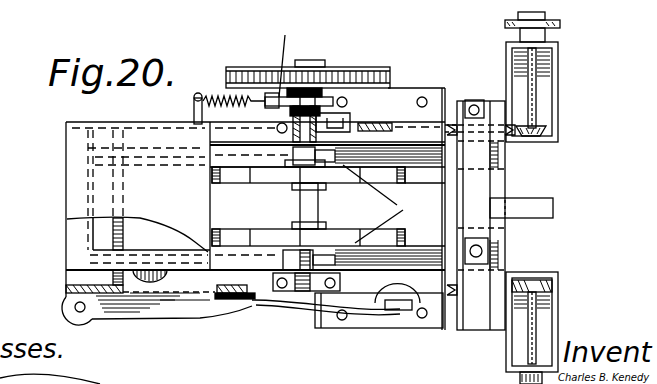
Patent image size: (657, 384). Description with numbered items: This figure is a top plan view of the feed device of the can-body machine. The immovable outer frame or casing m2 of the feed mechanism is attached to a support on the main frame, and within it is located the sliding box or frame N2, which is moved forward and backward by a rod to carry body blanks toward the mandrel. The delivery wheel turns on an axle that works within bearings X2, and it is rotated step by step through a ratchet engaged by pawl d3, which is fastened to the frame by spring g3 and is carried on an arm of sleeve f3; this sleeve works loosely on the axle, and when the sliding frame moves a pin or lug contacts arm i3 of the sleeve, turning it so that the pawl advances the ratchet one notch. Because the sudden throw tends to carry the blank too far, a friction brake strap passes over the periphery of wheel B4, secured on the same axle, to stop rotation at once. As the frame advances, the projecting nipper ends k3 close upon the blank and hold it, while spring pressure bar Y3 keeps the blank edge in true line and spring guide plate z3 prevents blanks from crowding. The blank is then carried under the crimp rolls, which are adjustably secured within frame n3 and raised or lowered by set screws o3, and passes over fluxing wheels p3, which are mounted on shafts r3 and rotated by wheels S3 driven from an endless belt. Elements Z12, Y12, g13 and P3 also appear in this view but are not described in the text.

The outer frame or casing m2 is at (72, 152).
The sliding box or frame N2 is at (90, 238).
The wheel B4 is at (345, 70).
The pawl d3 is at (299, 77).
The spring g3 is at (226, 97).
The sleeve f3 is at (345, 113).
The arm i3 is at (375, 121).
The shaft Z12 is at (283, 174).
The hub Y12 is at (305, 205).
The nipper ends k3 is at (382, 204).
The spring pressure bar Y3 is at (205, 307).
The bearings X2 is at (283, 290).
The frame n3 is at (478, 186).
The spring guide plate z3 is at (542, 214).
The set screws o3 is at (475, 100).
The cylinder g13 is at (545, 86).
The shafts r3 is at (534, 72).
The wheels S3 is at (546, 22).
The fluxing wheels p3 is at (548, 133).
The cylinder P3 is at (556, 274).